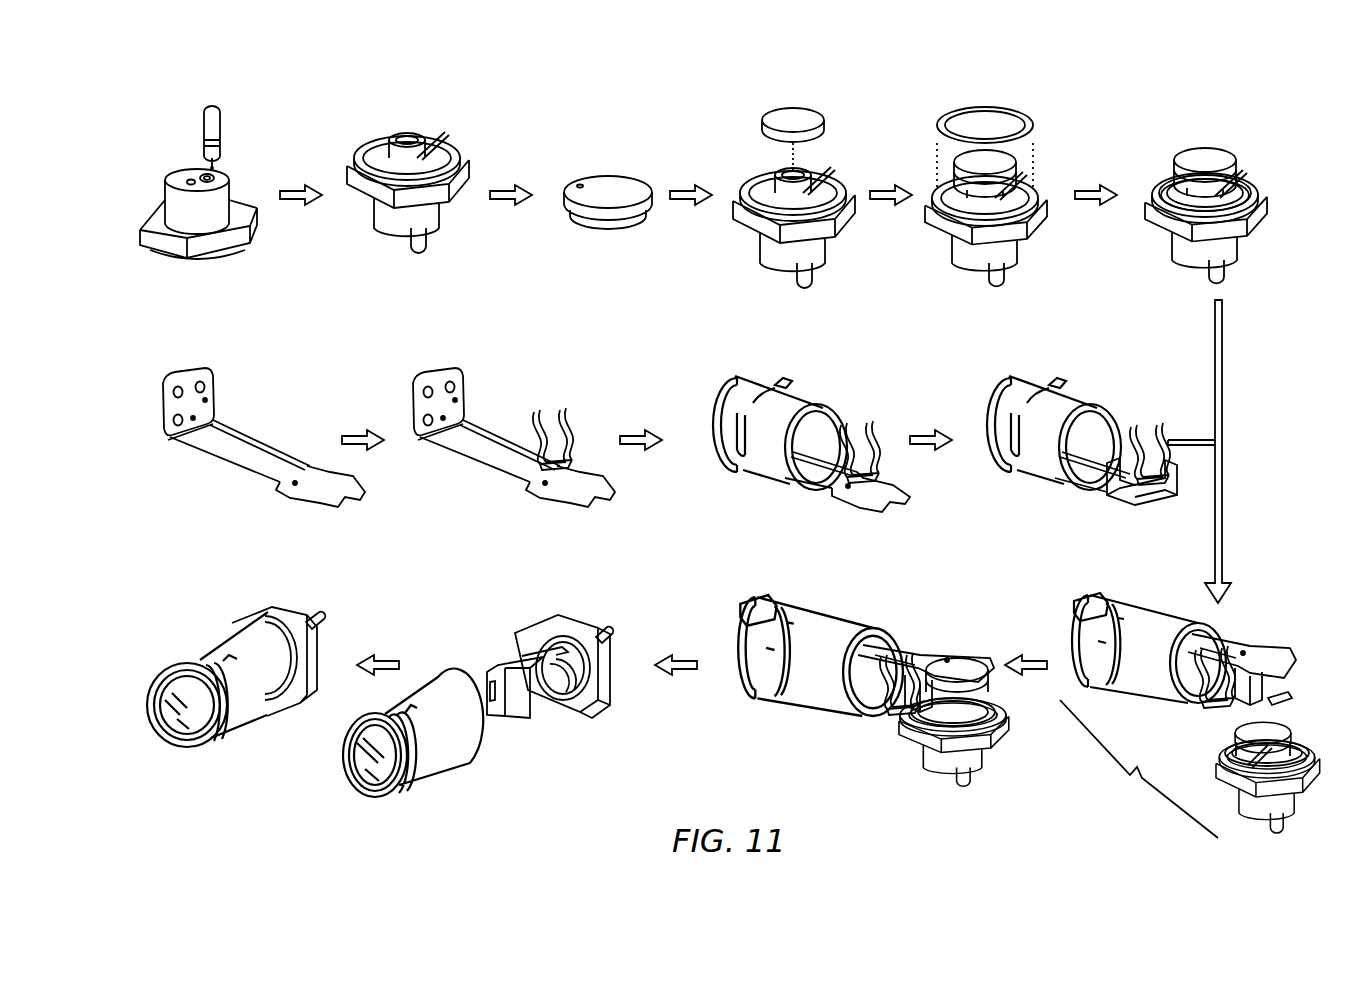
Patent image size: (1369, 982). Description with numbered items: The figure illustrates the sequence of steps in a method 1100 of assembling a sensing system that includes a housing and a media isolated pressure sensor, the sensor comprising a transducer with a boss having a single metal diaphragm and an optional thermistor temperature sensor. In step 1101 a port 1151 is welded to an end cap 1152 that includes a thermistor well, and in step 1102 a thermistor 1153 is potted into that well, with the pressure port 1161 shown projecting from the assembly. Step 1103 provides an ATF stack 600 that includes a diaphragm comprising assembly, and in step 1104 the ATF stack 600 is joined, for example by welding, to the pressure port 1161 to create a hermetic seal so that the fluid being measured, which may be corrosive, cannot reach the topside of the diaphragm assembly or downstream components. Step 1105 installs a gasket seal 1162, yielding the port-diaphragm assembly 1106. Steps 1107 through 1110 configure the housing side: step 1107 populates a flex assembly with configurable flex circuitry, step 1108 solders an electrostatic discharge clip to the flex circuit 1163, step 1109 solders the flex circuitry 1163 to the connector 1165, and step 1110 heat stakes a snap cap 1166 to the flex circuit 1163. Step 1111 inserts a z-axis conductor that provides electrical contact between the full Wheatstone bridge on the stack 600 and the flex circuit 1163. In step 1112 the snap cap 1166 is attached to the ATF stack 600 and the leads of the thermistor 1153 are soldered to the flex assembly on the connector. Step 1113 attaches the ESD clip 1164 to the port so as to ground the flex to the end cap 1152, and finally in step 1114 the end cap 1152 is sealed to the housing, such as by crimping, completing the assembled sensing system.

The method 1100 is at (629, 67).
The step 1101 is at (243, 147).
The step 1102 is at (462, 143).
The step 1103 is at (637, 168).
The step 1104 is at (838, 137).
The step 1105 is at (1043, 133).
The port-diaphragm assembly 1106 is at (1240, 150).
The step 1107 is at (250, 427).
The step 1108 is at (533, 398).
The step 1109 is at (863, 412).
The step 1110 is at (1133, 412).
The step 1111 is at (1278, 638).
The step 1112 is at (930, 638).
The step 1113 is at (618, 645).
The step 1114 is at (333, 638).
The ATF stack 600 is at (607, 177).
The port 1151 is at (200, 140).
The end cap 1152 is at (238, 205).
The thermistor 1153 is at (458, 160).
The pressure port 1161 is at (398, 146).
The gasket seal 1162 is at (983, 108).
The flex circuit 1163 is at (225, 452).
The ESD clip 1164 is at (575, 430).
The connector 1165 is at (793, 397).
The snap cap 1166 is at (1105, 480).